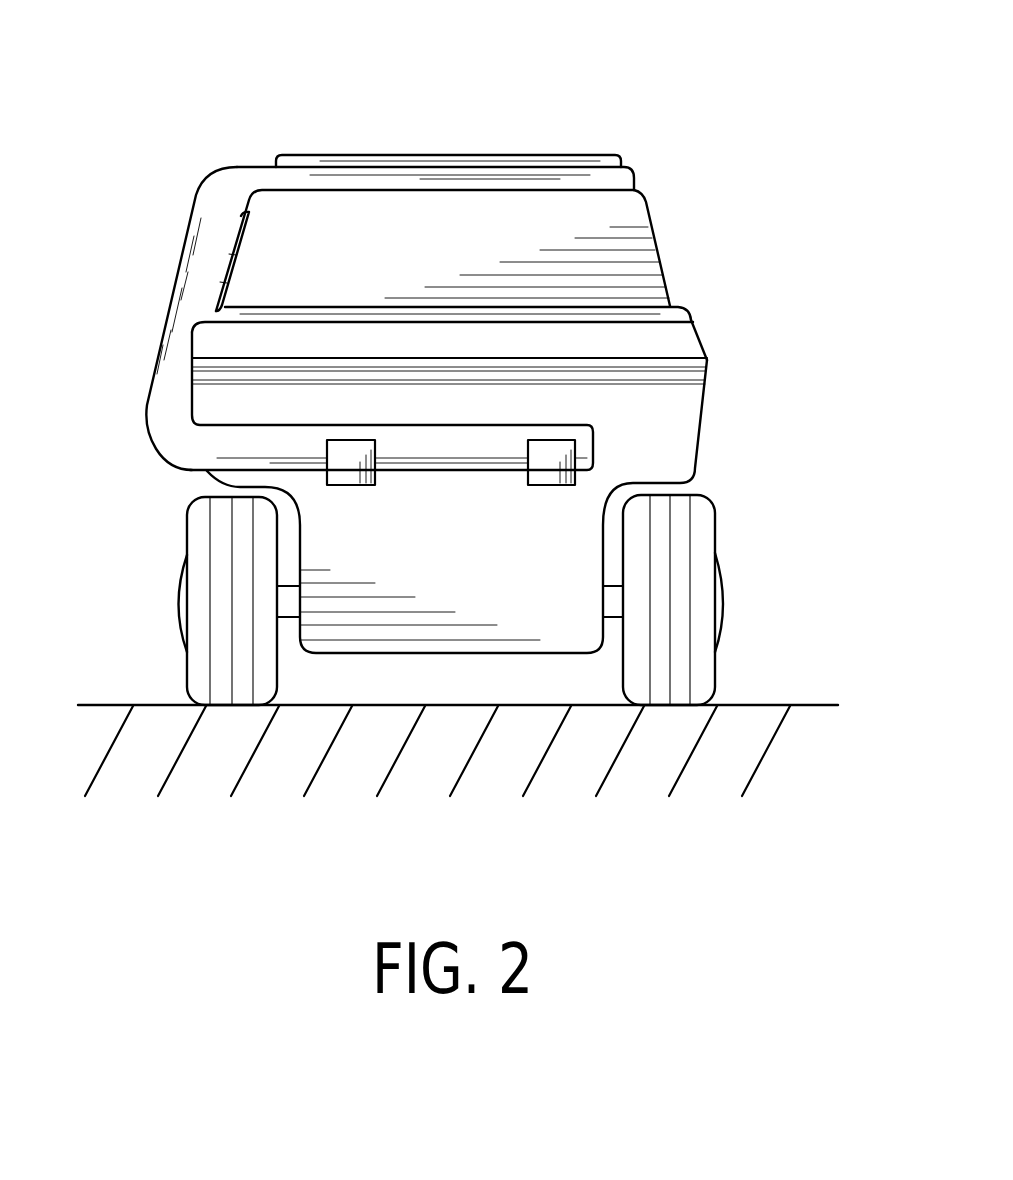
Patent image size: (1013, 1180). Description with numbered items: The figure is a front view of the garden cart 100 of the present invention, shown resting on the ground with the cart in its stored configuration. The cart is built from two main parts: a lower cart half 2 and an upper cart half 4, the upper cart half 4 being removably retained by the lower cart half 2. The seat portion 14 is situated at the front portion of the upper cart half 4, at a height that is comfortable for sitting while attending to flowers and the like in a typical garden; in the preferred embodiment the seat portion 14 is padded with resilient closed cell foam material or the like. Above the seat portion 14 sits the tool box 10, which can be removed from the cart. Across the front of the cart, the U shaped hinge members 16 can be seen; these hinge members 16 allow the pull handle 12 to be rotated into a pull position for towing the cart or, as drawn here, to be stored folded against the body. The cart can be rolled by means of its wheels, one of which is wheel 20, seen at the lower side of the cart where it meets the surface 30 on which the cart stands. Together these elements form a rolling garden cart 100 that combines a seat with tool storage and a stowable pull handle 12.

The garden cart 100 is at (150, 48).
The lower cart half 2 is at (698, 420).
The upper cart half 4 is at (707, 347).
The tool box 10 is at (622, 161).
The pull handle 12 is at (636, 183).
The seat portion 14 is at (688, 312).
The U shaped hinge members 16 is at (343, 485).
The wheel 20 is at (198, 523).
The floor surface 30 is at (805, 705).